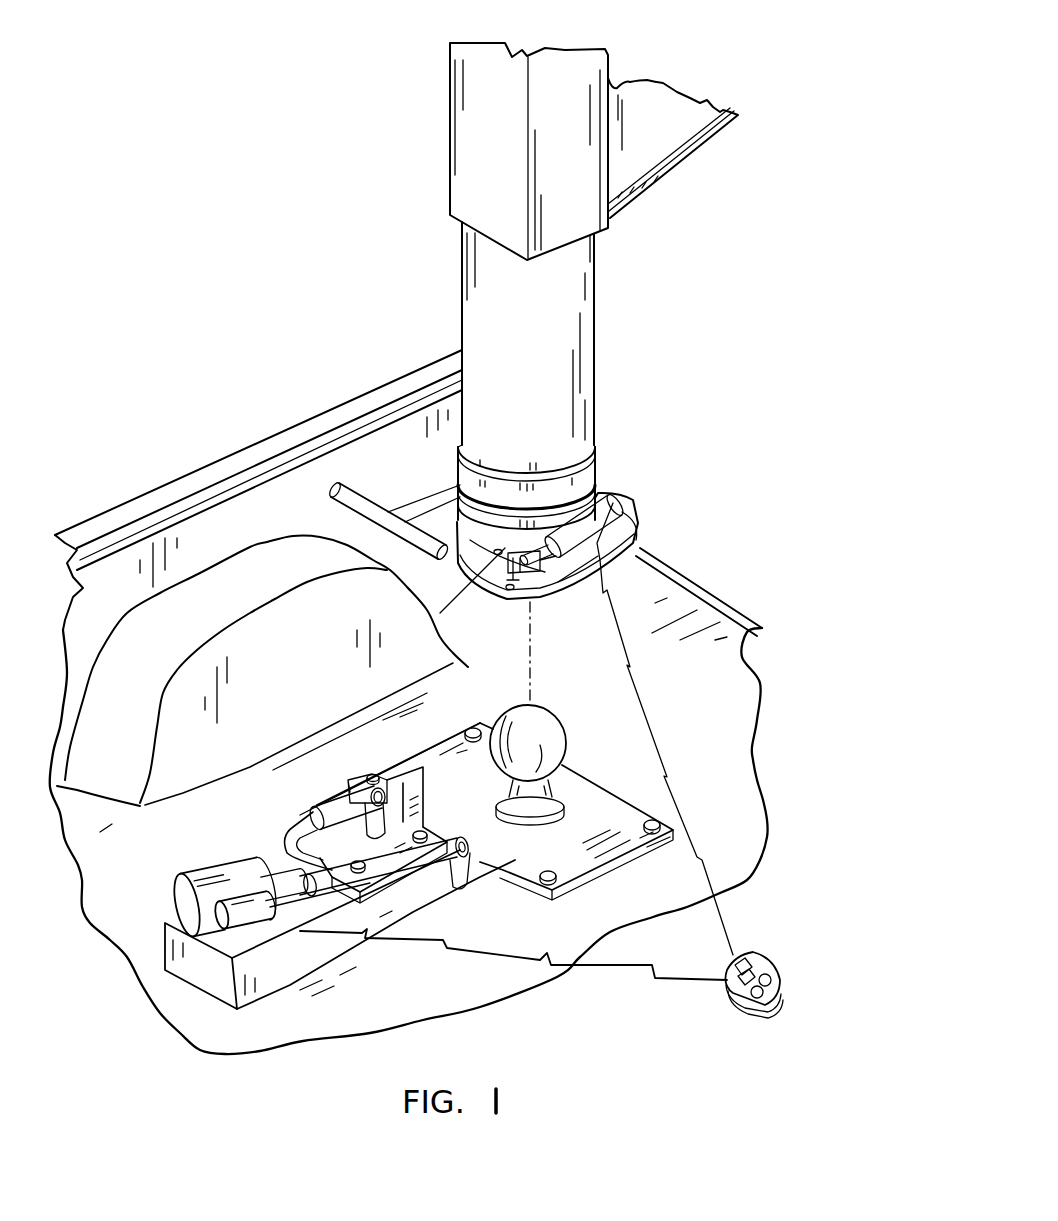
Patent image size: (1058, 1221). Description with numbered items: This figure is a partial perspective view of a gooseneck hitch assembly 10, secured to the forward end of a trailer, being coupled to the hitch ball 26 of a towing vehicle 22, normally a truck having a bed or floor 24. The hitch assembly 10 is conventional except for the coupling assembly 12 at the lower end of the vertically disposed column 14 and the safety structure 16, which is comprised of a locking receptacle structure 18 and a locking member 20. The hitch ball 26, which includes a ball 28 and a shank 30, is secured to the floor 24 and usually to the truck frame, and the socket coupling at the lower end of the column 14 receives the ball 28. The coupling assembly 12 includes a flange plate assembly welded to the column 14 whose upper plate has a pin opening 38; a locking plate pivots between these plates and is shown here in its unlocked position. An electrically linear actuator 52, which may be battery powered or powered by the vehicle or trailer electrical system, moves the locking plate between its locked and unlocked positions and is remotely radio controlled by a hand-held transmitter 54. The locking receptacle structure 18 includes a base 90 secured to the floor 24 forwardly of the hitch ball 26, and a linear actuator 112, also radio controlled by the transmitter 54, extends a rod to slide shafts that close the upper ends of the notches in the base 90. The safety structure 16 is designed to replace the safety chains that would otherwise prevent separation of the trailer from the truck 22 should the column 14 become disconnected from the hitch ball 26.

The gooseneck hitch assembly 10 is at (668, 68).
The coupling assembly 12 is at (648, 534).
The vertically disposed column 14 is at (580, 393).
The safety structure 16 is at (605, 470).
The locking receptacle structure 18 is at (306, 930).
The locking member 20 is at (411, 488).
The towing vehicle 22 is at (203, 452).
The bed or floor 24 is at (161, 869).
The hitch ball 26 is at (495, 766).
The ball 28 is at (545, 742).
The shank 30 is at (550, 788).
The pin opening 38 is at (497, 553).
The electrically linear actuator 52 is at (617, 500).
The hand-held transmitter 54 is at (727, 1003).
The base 90 is at (283, 963).
The linear actuator 112 is at (222, 915).